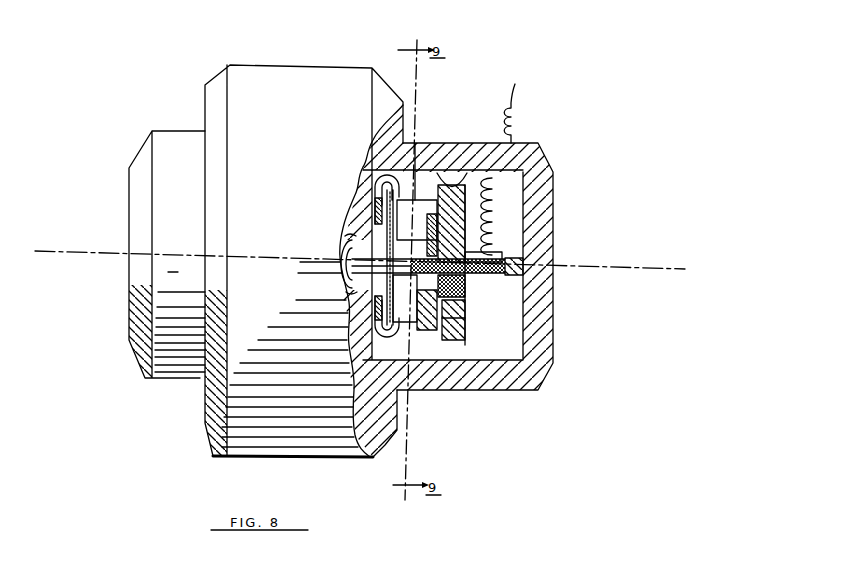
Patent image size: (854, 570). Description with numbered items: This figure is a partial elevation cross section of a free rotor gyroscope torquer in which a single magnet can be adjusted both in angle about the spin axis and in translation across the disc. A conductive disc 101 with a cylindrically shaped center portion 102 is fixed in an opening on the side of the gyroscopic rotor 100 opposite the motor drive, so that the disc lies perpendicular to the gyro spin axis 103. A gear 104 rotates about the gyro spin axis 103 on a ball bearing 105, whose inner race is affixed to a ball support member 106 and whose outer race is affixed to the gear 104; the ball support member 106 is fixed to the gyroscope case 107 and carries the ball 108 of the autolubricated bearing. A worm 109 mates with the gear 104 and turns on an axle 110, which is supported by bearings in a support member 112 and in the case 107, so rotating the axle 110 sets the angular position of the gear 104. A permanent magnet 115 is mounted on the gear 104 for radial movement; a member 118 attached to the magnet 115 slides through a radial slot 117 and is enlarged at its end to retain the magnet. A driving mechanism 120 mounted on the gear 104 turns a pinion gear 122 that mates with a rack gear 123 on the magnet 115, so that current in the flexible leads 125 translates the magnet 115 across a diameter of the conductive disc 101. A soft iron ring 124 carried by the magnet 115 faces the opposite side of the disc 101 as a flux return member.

The gyroscopic rotor 100 is at (350, 233).
The conductive disc 101 is at (394, 338).
The cylindrically shaped center portion 102 is at (346, 256).
The gyro spin axis 103 is at (604, 268).
The gear 104 is at (478, 212).
The ball bearing 105 is at (466, 298).
The ball support member 106 is at (553, 251).
The gyroscope case 107 is at (548, 165).
The ball 108 is at (343, 279).
The worm 109 is at (477, 190).
The axle 110 is at (455, 184).
The support member 112 is at (497, 187).
The permanent magnet 115 is at (410, 208).
The radial slot 117 is at (418, 334).
The member 118 is at (463, 331).
The driving mechanism 120 is at (493, 256).
The pinion gear 122 is at (417, 293).
The rack gear 123 is at (427, 247).
The soft iron ring 124 is at (372, 205).
The leads 125 is at (514, 112).